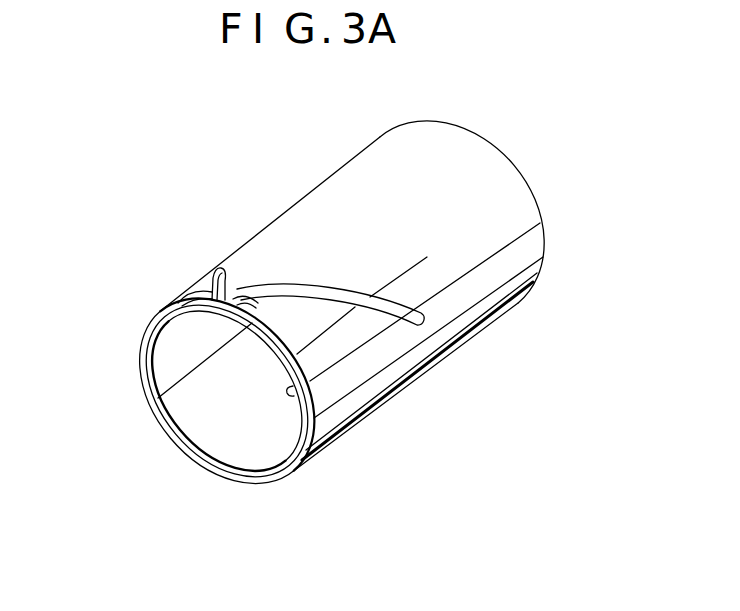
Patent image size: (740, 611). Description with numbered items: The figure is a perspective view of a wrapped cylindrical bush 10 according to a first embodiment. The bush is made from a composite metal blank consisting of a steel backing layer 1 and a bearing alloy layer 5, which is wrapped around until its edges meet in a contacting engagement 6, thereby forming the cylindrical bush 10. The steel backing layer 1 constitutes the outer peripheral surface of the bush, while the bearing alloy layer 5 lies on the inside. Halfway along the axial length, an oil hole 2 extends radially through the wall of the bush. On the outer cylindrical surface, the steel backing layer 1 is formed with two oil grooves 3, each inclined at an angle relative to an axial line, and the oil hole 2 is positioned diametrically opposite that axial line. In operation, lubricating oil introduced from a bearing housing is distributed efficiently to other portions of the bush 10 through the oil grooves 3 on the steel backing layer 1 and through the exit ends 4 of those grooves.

The wrapped cylindrical bush 10 is at (264, 222).
The steel backing layer 1 is at (262, 481).
The oil hole 2 is at (292, 396).
The oil grooves 3 is at (216, 274).
The exit ends 4 is at (203, 287).
The bearing alloy layer 5 is at (208, 463).
The contacting engagement 6 is at (142, 398).